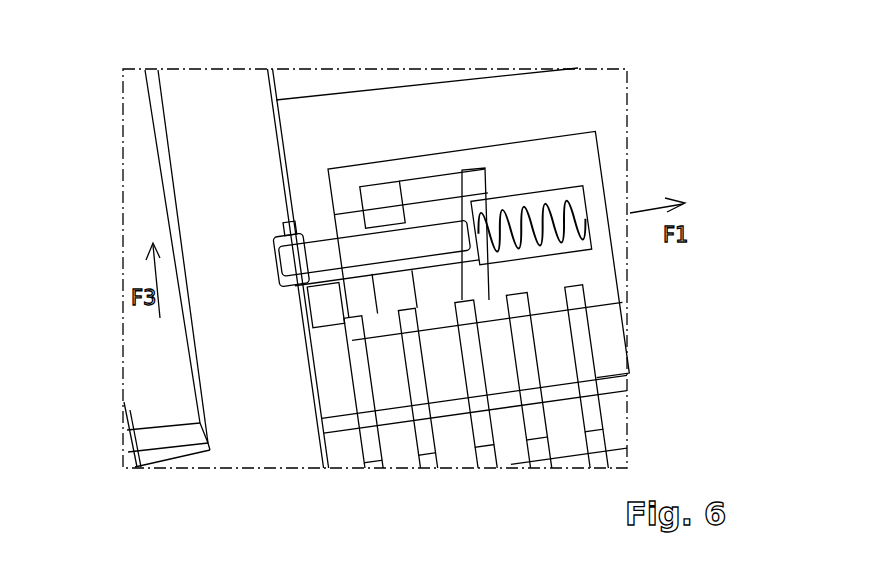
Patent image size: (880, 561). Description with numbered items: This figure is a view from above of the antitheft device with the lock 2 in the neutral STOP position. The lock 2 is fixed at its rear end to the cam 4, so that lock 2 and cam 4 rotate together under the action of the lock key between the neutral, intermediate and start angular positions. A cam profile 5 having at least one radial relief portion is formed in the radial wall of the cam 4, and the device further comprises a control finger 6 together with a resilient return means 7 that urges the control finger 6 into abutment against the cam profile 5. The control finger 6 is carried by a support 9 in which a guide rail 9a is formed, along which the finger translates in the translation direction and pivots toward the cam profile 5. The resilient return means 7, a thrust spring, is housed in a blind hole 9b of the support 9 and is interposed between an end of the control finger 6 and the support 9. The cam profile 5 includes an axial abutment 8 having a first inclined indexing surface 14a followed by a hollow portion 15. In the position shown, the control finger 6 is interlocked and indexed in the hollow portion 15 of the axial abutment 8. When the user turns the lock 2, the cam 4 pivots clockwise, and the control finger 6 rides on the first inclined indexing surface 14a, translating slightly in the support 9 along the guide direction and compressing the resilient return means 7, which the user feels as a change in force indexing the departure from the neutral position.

The lock 2 is at (453, 438).
The cam 4 is at (160, 388).
The cam profile 5 is at (275, 433).
The control finger 6 is at (328, 250).
The resilient return means 7 is at (538, 188).
The axial abutment 8 is at (267, 257).
The support 9 is at (428, 150).
The guide rail 9a is at (383, 190).
The blind hole 9b is at (583, 186).
The first inclined indexing surface 14a is at (232, 468).
The hollow portion 15 is at (276, 248).